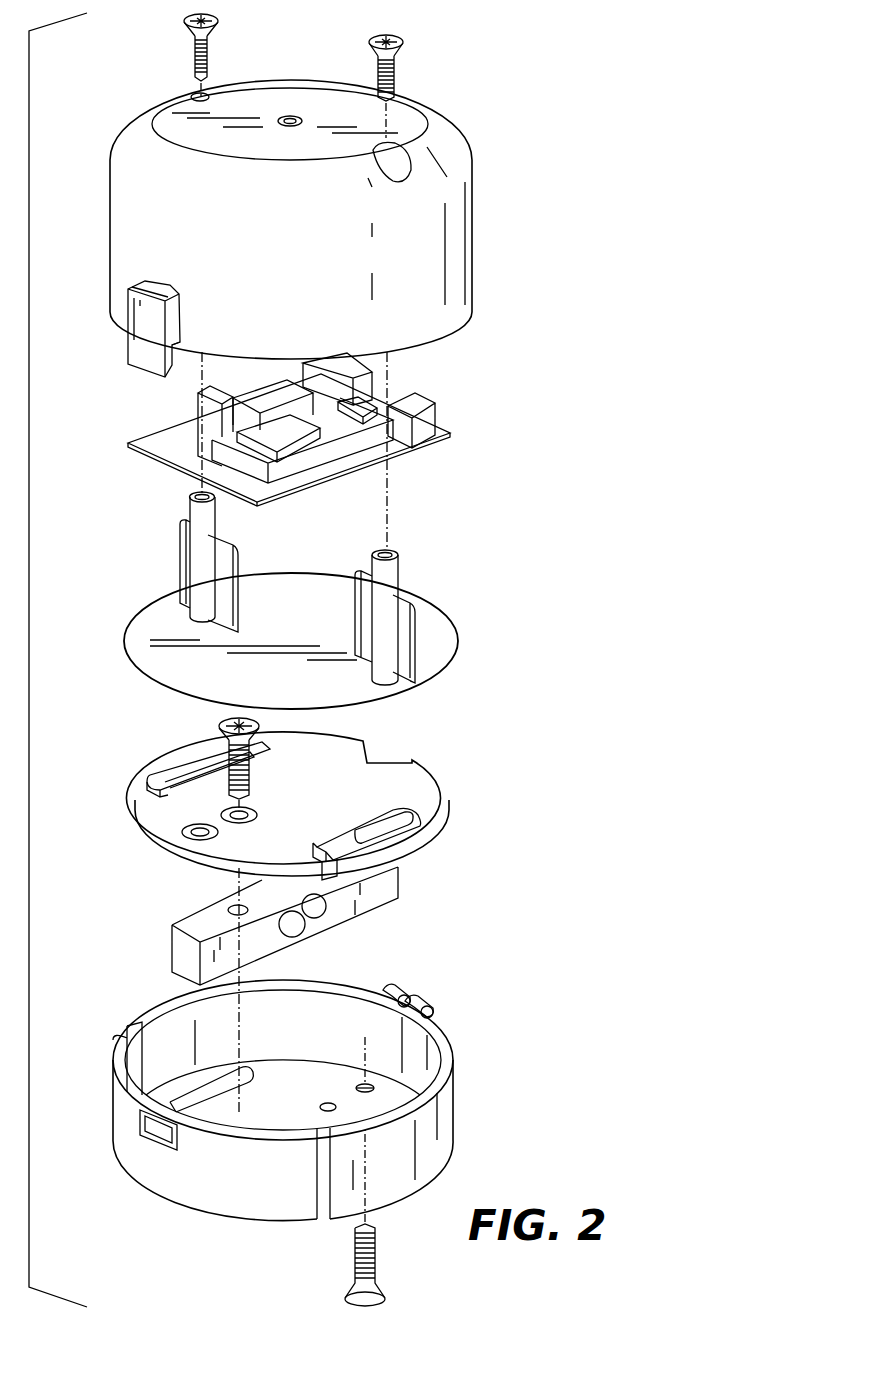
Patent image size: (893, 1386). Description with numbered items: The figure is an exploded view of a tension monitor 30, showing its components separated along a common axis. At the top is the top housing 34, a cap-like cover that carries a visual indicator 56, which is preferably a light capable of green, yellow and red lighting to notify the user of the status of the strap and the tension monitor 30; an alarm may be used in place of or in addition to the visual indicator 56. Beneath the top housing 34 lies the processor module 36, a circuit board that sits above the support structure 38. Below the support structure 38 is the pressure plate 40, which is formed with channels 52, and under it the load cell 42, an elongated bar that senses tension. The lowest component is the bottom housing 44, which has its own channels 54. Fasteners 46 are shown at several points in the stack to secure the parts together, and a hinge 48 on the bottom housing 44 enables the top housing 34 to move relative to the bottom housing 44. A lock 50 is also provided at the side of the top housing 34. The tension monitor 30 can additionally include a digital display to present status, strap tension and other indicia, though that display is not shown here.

The tension monitor 30 is at (518, 106).
The top housing 34 is at (458, 247).
The processor module 36 is at (433, 423).
The support structure 38 is at (433, 632).
The pressure plate 40 is at (403, 778).
The load cell 42 is at (380, 893).
The bottom housing 44 is at (428, 1123).
The fasteners 46 is at (193, 40).
The hinge 48 is at (425, 997).
The lock 50 is at (133, 352).
The channels 52 is at (177, 760).
The channels 54 is at (192, 1090).
The visual indicator 56 is at (290, 116).